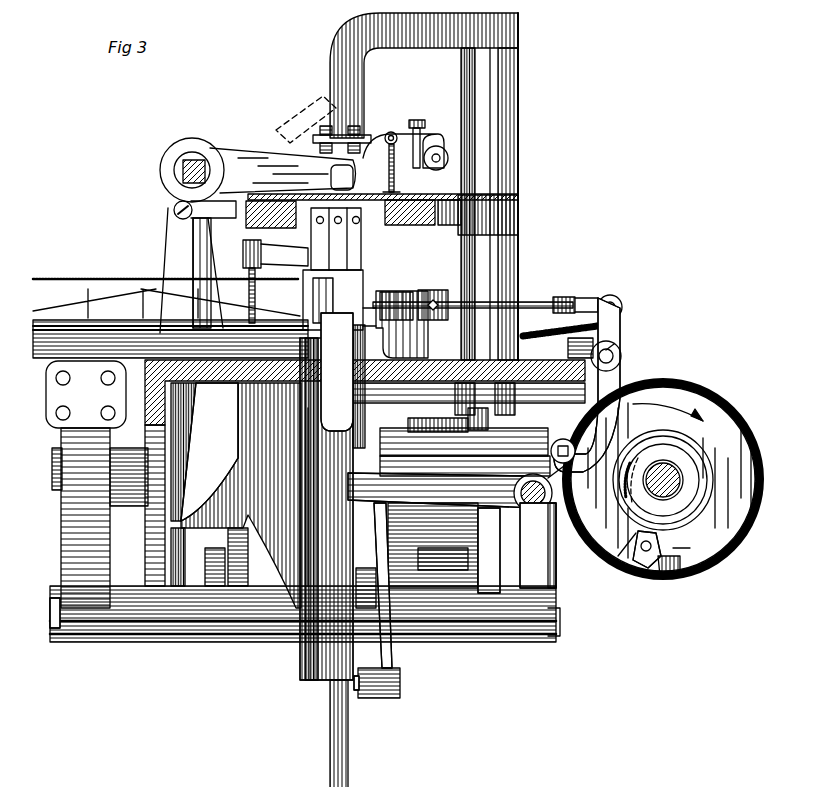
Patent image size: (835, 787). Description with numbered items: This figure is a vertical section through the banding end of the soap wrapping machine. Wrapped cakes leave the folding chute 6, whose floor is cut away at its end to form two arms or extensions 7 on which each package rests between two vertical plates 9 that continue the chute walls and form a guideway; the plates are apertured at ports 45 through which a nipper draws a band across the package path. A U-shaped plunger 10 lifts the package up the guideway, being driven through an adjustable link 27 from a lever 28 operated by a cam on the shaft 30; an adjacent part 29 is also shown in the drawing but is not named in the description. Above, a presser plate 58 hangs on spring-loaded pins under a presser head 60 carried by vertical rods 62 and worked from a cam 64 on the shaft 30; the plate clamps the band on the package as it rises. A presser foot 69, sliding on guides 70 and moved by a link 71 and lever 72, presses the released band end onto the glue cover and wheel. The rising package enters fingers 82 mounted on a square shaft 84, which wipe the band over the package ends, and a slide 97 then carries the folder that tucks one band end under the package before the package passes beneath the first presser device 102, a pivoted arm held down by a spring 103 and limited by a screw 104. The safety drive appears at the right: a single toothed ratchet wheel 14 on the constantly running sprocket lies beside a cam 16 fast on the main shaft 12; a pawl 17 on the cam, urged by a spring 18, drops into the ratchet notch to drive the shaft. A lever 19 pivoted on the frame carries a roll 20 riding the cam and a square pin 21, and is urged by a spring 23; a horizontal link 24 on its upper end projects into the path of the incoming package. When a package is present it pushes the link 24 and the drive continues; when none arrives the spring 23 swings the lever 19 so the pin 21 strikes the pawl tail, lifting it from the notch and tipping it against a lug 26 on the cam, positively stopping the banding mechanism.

The presser head 60 is at (334, 33).
The vertical rods 62 is at (470, 152).
The finger 82 is at (262, 155).
The square shaft 84 is at (176, 166).
The presser plate 58 is at (290, 112).
The presser device 102 is at (383, 124).
The spring 103 is at (388, 162).
The bolt or screw 104 is at (410, 113).
The slide 97 is at (353, 222).
The vertical plates 9 is at (355, 262).
The apertures or ports 45 is at (355, 275).
The presser foot 69 is at (300, 242).
The guides 70 is at (247, 266).
The folding chute 6 is at (110, 280).
The shaft 30 is at (104, 505).
The link 71 is at (262, 425).
The plunger 10 is at (345, 395).
The arms or extensions 7 is at (328, 360).
The horizontal link 24 is at (520, 294).
The spring 23 is at (566, 315).
The lever 19 is at (612, 338).
The cam 16 is at (650, 388).
The single toothed ratchet wheel 14 is at (700, 445).
The main shaft 12 is at (675, 470).
The spring 18 is at (632, 455).
The pawl or dog 17 is at (620, 556).
The lug 26 is at (655, 572).
The roll 20 is at (556, 432).
The square pin 21 is at (544, 438).
The lever 29 is at (400, 440).
The cam 64 is at (474, 530).
The lever 72 is at (548, 515).
The lever 28 is at (392, 646).
The adjustable link 27 is at (358, 676).